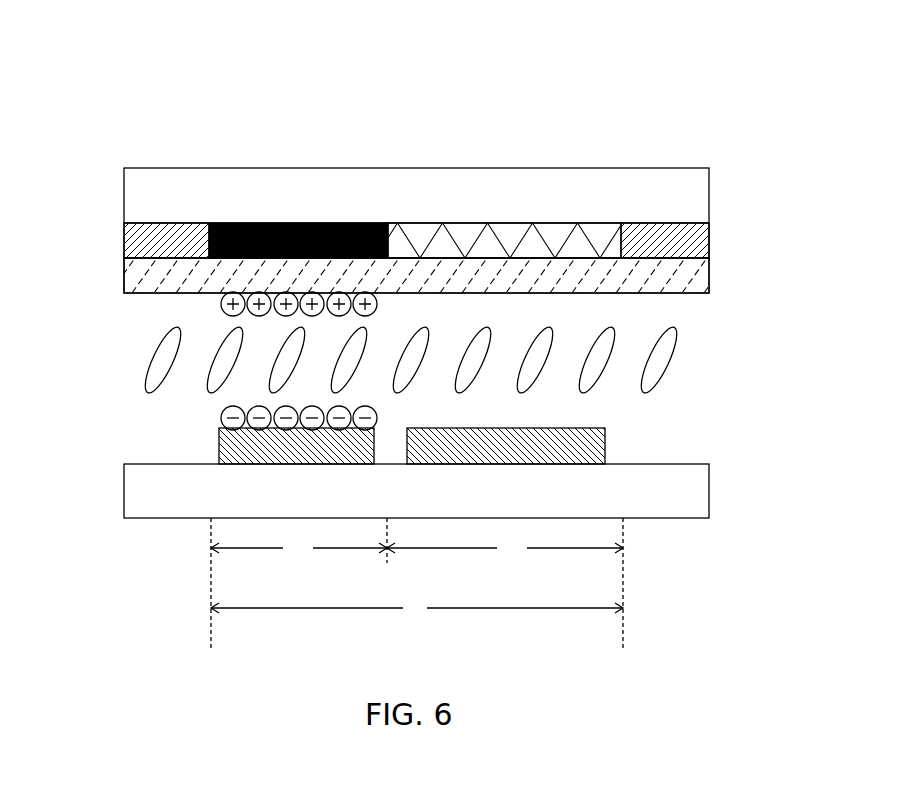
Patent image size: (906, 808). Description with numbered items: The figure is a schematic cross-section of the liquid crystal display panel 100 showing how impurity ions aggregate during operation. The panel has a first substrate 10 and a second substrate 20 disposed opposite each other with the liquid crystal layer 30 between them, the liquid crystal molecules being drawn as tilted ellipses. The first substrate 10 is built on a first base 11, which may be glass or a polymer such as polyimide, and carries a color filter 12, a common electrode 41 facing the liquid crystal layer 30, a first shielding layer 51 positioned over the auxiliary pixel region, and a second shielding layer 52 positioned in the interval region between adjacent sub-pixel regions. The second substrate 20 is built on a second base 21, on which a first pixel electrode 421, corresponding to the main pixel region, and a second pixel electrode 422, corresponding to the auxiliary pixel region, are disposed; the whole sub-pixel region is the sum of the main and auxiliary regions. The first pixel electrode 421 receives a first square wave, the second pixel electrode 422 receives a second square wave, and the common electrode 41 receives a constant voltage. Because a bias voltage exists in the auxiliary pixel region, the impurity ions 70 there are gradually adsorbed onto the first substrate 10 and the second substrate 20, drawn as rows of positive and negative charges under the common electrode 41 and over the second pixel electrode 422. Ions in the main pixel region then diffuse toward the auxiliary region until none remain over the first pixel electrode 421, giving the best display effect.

The liquid crystal display panel 100 is at (172, 54).
The first substrate 10 is at (112, 212).
The first base 11 is at (692, 194).
The color filter 12 is at (502, 235).
The first shielding layer 51 is at (296, 223).
The second shielding layer 52 is at (667, 237).
The common electrode 41 is at (690, 277).
The impurity ions 70 is at (221, 303).
The liquid crystal layer 30 is at (672, 350).
The second substrate 20 is at (112, 482).
The second base 21 is at (692, 490).
The first pixel electrode 421 is at (580, 440).
The second pixel electrode 422 is at (230, 440).